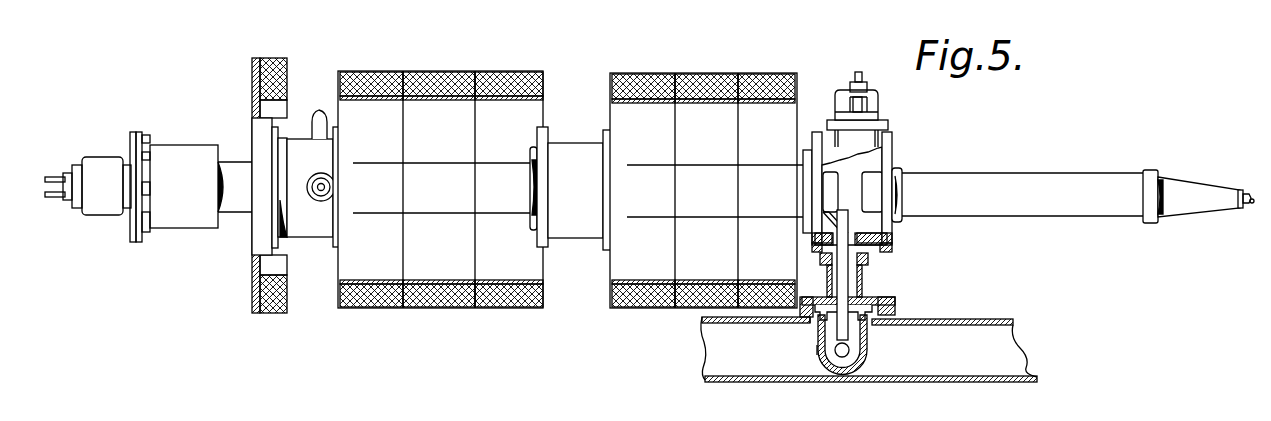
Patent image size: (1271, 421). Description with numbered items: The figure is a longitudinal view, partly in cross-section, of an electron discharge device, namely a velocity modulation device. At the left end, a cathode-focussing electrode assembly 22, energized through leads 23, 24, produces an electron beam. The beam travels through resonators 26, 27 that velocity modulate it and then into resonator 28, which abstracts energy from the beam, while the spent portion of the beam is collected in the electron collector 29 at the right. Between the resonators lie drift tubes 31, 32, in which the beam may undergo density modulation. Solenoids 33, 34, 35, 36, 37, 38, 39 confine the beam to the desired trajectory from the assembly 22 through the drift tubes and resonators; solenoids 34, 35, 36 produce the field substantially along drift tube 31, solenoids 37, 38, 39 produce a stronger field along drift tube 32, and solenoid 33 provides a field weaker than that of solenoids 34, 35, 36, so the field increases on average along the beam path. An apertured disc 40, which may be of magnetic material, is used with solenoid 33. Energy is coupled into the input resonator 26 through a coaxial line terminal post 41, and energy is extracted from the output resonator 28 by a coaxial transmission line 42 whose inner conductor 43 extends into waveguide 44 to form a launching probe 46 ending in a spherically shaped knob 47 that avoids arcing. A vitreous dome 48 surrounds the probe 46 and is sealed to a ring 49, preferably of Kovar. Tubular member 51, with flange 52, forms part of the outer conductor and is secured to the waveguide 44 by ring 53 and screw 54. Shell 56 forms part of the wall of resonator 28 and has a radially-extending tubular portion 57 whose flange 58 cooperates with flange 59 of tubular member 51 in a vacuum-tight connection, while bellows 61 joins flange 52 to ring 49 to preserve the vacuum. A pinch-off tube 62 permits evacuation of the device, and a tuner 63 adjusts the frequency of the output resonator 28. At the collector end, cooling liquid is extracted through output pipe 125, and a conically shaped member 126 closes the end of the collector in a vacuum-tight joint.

The cathode-focussing electrode assembly 22 is at (177, 222).
The lead 23 is at (54, 175).
The lead 24 is at (59, 198).
The buncher or input resonator 26 is at (595, 177).
The resonator 27 is at (578, 240).
The catcher or output resonator 28 is at (893, 156).
The electron collector 29 is at (1078, 195).
The drift tube 31 is at (440, 203).
The drift tube 32 is at (706, 195).
The solenoid 33 is at (275, 316).
The solenoid 34 is at (379, 308).
The solenoid 35 is at (438, 308).
The solenoid 36 is at (500, 308).
The solenoid 37 is at (644, 310).
The solenoid 38 is at (688, 312).
The solenoid 39 is at (771, 73).
The apertured disc 40 is at (241, 202).
The coaxial line terminal post 41 is at (317, 176).
The coaxial transmission line 42 is at (854, 293).
The inner conductor 43 is at (850, 281).
The waveguide 44 is at (992, 319).
The electromagnetic energy launching probe 46 is at (849, 350).
The spherically-shaped knob 47 is at (862, 366).
The vitreous dome 48 is at (817, 350).
The ring 49 is at (810, 323).
The tubular member 51 is at (827, 281).
The flange 52 is at (895, 303).
The ring 53 is at (895, 309).
The screw 54 is at (895, 299).
The shell 56 is at (866, 236).
The radially-extending tubular portion 57 is at (893, 250).
The flange 58 is at (815, 253).
The flange 59 is at (823, 260).
The bellows 61 is at (872, 322).
The pinch-off tube 62 is at (311, 113).
The tuner 63 is at (884, 104).
The output pipe 125 is at (1246, 193).
The conically shaped member 126 is at (1193, 217).